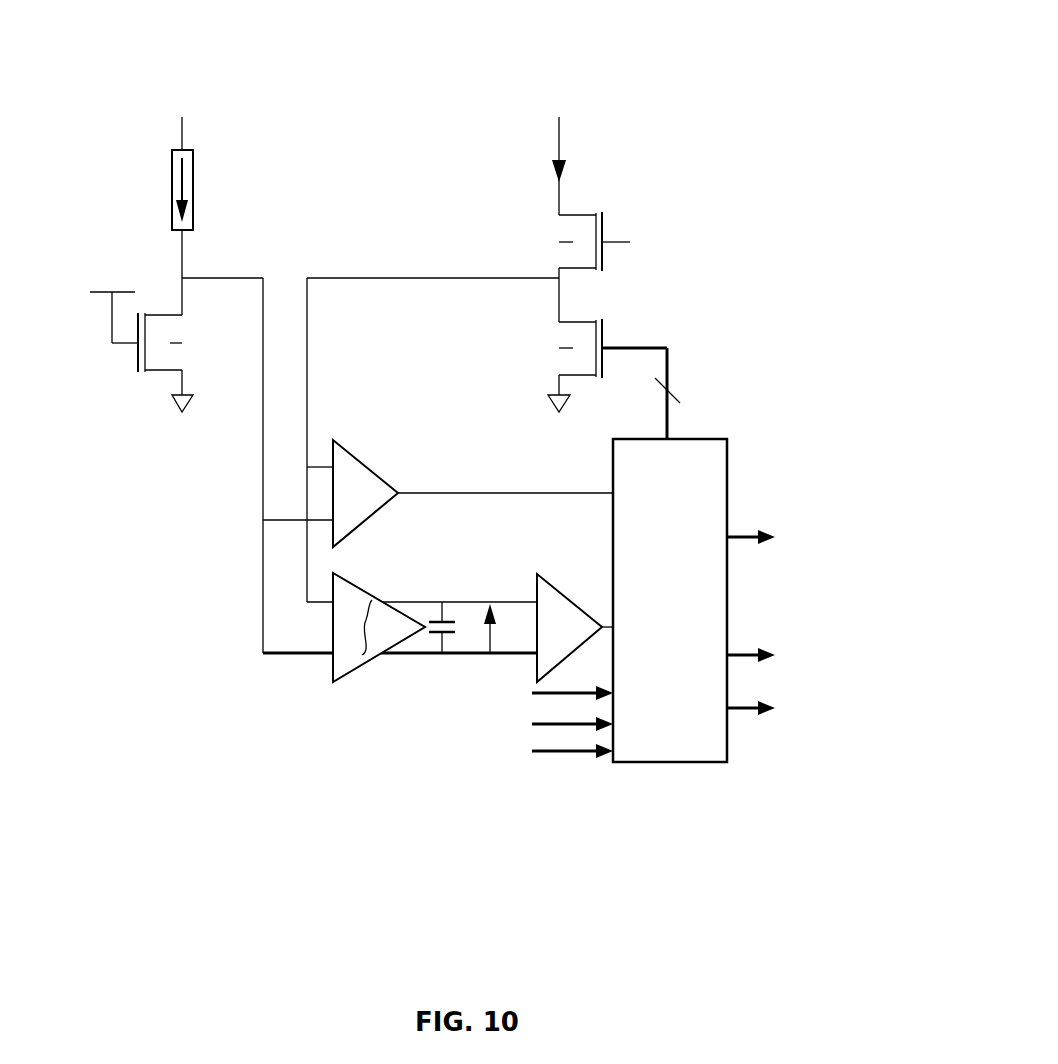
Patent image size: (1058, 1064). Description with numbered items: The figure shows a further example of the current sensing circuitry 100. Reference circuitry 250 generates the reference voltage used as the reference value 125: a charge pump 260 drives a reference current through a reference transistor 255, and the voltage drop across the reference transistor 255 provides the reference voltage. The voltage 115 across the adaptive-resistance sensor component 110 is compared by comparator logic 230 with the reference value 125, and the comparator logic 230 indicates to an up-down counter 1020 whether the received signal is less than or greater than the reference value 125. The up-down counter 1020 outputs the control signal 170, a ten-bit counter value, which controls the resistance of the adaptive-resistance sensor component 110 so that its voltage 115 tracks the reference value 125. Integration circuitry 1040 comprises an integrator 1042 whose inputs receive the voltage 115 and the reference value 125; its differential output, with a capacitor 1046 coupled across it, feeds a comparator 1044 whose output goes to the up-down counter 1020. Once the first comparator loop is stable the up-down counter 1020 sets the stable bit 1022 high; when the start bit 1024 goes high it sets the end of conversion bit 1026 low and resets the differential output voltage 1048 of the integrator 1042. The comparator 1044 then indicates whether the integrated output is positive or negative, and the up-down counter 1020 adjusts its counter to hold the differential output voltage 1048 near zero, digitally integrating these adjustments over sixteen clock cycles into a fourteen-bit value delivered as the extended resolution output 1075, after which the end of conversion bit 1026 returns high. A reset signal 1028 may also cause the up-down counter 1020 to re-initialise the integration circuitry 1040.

The current sensing circuitry 100 is at (674, 88).
The reference circuitry 250 is at (68, 164).
The charge pump 260 is at (191, 155).
The reference transistor 255 is at (138, 367).
The reference value 125 is at (262, 575).
The voltage across the adaptive-resistance sensor component 115 is at (425, 278).
The adaptive-resistance sensor component 110 is at (604, 326).
The control signal 170 is at (670, 365).
The comparator logic 230 is at (357, 463).
The integration circuitry 1040 is at (338, 747).
The integrator 1042 is at (330, 655).
The capacitor 1046 is at (432, 637).
The differential output voltage 1048 is at (483, 622).
The comparator 1044 is at (533, 590).
The up-down counter 1020 is at (648, 764).
The reset signal 1028 is at (532, 723).
The start bit 1024 is at (588, 753).
The extended resolution output 1075 is at (755, 533).
The end of conversion bit 1026 is at (808, 655).
The stable bit 1022 is at (755, 712).